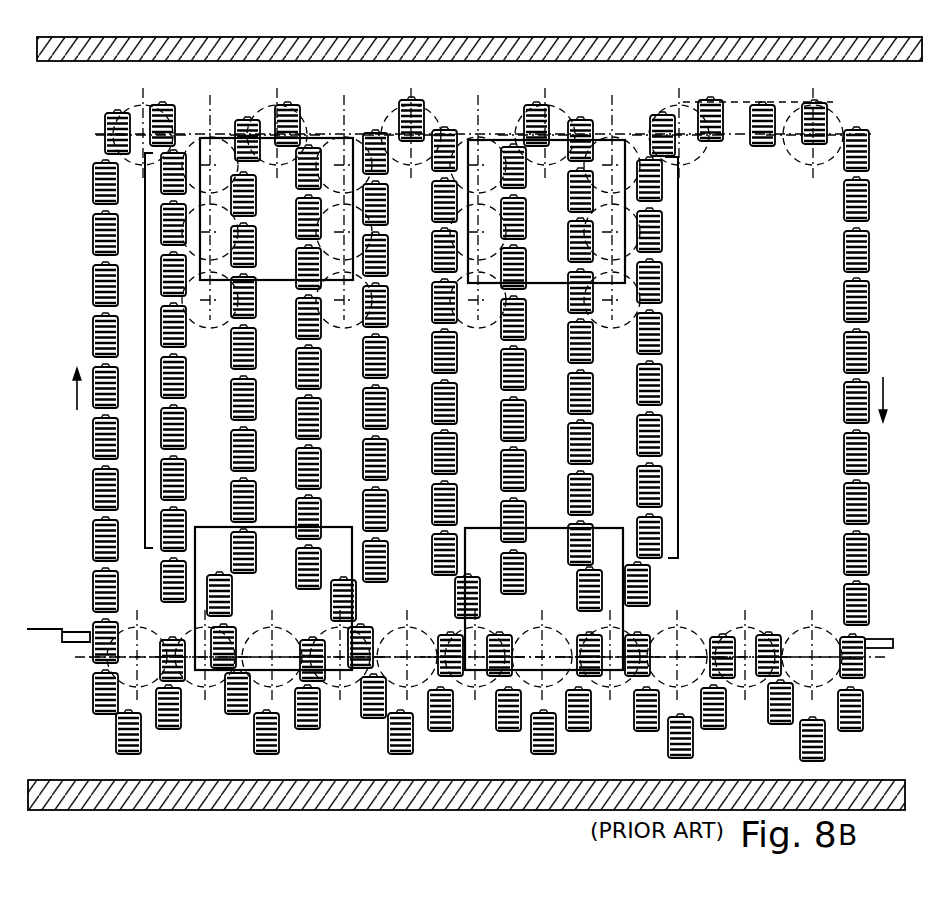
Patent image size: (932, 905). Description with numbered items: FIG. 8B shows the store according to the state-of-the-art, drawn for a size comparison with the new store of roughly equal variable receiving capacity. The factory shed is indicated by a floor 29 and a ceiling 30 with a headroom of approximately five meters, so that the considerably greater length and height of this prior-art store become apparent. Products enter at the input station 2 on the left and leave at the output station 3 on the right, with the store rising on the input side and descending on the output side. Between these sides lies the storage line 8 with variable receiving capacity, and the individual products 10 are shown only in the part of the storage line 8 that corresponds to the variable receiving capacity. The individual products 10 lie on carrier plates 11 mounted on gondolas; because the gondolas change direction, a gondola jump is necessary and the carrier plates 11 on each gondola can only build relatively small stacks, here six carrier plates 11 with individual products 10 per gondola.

The ceiling 30 is at (56, 62).
The floor 29 is at (43, 780).
The input station 2 is at (78, 616).
The output station 3 is at (873, 613).
The storage line 8 is at (145, 364).
The individual products 10 is at (667, 188).
The carrier plates 11 is at (652, 602).